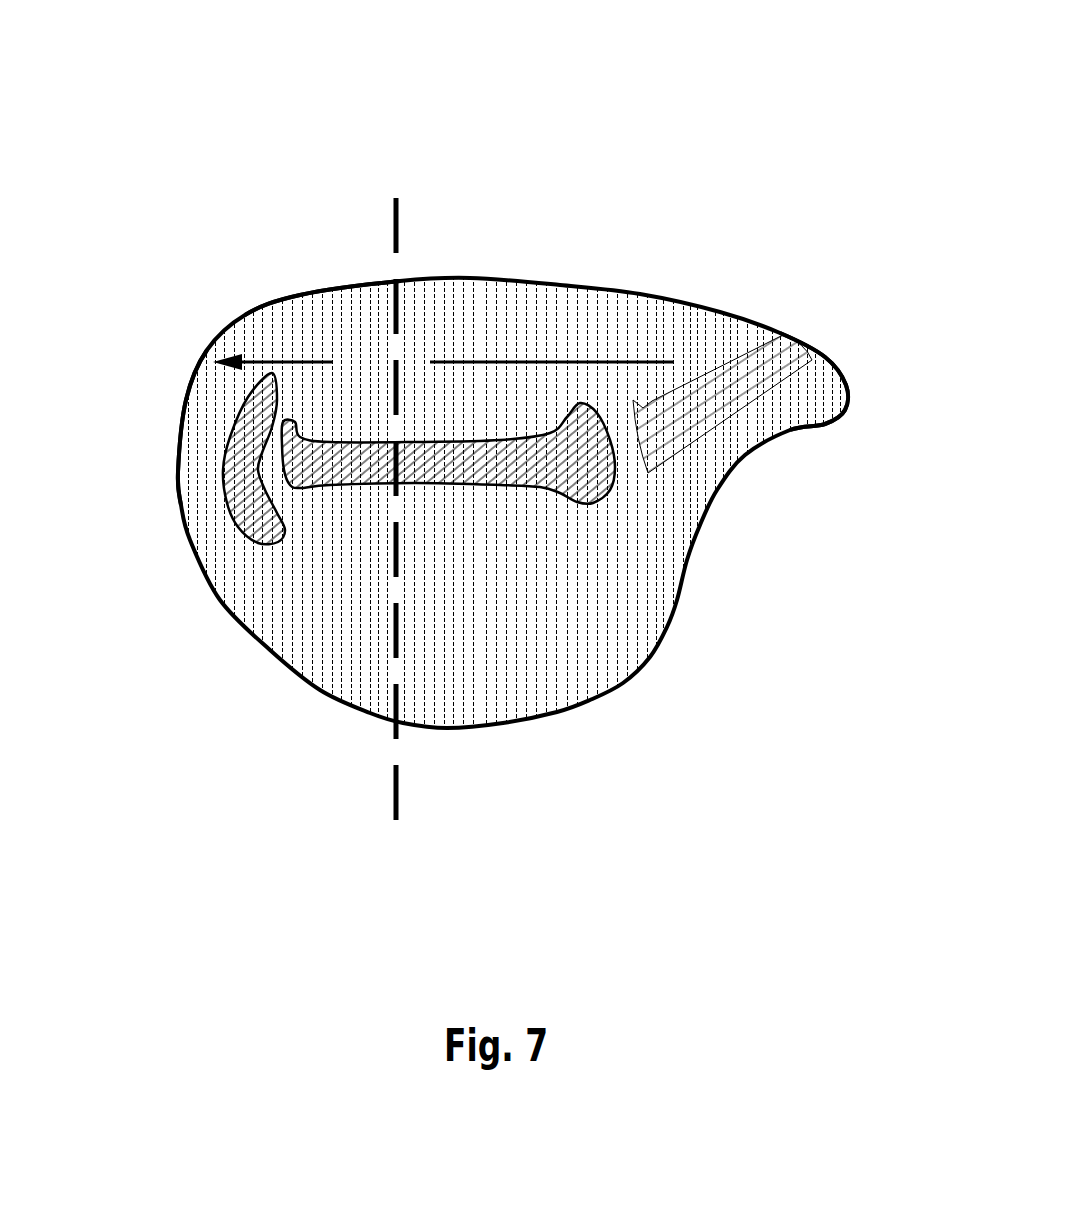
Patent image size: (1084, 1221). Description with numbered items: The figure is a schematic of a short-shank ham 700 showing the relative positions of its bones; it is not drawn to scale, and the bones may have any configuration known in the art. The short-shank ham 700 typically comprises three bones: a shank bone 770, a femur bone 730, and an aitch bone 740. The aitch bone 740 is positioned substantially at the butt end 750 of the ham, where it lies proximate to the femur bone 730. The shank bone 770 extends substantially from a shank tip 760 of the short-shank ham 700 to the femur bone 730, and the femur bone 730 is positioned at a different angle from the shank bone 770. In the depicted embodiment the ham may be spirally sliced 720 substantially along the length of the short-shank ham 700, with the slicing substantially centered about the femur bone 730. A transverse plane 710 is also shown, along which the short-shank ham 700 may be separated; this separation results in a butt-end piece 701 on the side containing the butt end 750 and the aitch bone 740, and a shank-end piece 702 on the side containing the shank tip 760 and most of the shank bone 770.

The short-shank ham 700 is at (693, 245).
The butt-end piece 701 is at (254, 584).
The shank-end piece 702 is at (650, 352).
The transverse plane 710 is at (393, 197).
The spiral slicing 720 is at (290, 296).
The femur bone 730 is at (362, 441).
The aitch bone 740 is at (228, 437).
The butt end 750 is at (178, 477).
The shank tip 760 is at (851, 397).
The shank bone 770 is at (805, 346).